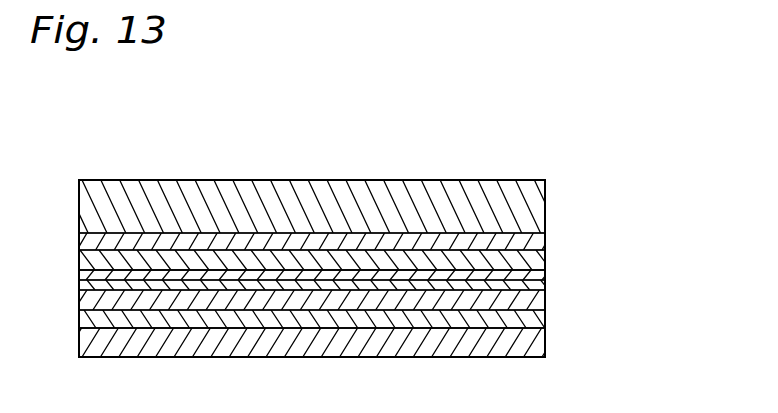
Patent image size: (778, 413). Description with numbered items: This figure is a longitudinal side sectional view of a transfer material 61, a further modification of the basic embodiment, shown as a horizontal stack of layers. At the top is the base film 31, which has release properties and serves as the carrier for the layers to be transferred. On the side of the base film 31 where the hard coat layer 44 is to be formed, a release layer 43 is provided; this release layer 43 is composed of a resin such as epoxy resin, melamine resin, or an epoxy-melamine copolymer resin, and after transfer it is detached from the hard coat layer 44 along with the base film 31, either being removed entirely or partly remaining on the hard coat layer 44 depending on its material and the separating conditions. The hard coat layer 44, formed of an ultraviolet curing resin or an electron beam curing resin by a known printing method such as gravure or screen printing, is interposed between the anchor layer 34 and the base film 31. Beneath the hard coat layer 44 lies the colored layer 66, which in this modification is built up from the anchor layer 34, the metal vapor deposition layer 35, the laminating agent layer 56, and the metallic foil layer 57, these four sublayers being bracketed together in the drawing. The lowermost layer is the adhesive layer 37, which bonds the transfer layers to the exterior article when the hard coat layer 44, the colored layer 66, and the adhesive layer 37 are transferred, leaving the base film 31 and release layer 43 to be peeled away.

The transfer material 61 is at (313, 158).
The base film 31 is at (515, 192).
The release layer 43 is at (535, 240).
The hard coat layer 44 is at (530, 258).
The anchor layer 34 is at (535, 274).
The metal vapor deposition layer 35 is at (540, 282).
The laminating agent layer 56 is at (543, 297).
The metallic foil layer 57 is at (545, 320).
The adhesive layer 37 is at (545, 350).
The colored layer 66 is at (668, 370).